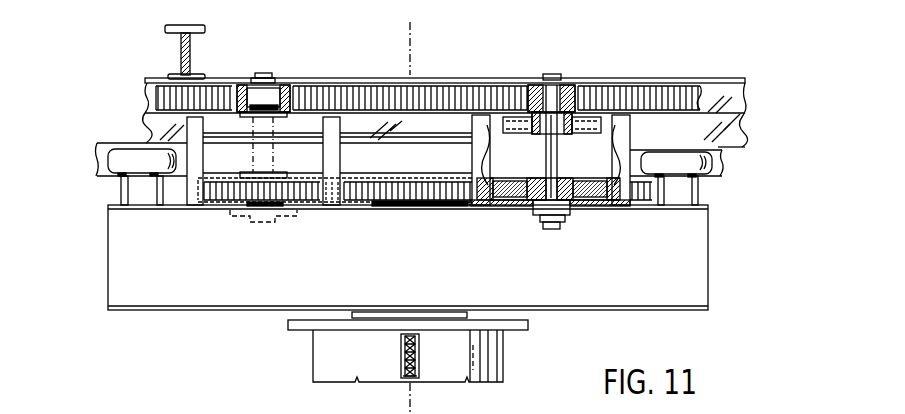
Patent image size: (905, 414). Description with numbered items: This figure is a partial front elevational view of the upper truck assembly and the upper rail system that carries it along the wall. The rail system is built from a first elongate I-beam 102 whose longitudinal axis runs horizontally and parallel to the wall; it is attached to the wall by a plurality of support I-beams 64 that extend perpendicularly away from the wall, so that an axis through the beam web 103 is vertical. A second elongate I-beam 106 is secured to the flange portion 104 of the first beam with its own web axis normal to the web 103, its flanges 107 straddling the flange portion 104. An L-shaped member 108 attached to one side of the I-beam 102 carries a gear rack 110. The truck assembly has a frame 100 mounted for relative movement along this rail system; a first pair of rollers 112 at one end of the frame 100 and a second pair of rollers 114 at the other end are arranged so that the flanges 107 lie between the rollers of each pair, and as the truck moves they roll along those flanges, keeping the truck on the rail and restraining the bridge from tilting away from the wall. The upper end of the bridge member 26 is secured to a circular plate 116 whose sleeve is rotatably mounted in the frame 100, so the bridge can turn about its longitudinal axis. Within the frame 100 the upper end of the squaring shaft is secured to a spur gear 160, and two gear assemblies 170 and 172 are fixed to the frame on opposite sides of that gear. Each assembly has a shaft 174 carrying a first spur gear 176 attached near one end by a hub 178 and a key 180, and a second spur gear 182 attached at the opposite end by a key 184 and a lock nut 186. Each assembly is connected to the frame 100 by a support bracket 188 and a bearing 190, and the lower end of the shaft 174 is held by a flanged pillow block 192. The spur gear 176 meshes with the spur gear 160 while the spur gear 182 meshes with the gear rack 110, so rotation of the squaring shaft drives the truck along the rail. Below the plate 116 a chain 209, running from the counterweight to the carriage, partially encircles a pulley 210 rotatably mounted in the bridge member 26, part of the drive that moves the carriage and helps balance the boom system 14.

The boom system 14 is at (414, 43).
The bridge member 26 is at (478, 365).
The support I-beam 64 is at (192, 53).
The upper frame 100 is at (218, 313).
The first elongate I-beam 102 is at (738, 74).
The beam web 103 is at (748, 115).
The flange portion 104 is at (747, 144).
The second elongate I-beam 106 is at (730, 172).
The flanges 107 is at (723, 165).
The L-shaped member 108 is at (693, 90).
The gear rack 110 is at (656, 88).
The first pair of rollers 112 is at (123, 161).
The second pair of rollers 114 is at (690, 168).
The circular plate 116 is at (529, 328).
The spur gear 160 is at (399, 201).
The gear assembly 170 is at (273, 69).
The gear assembly 172 is at (558, 72).
The shaft 174 is at (562, 222).
The first spur gear 176 is at (228, 192).
The hub 178 is at (511, 208).
The key 180 is at (545, 177).
The second spur gear 182 is at (576, 83).
The key 184 is at (535, 84).
The lock nut 186 is at (552, 74).
The support bracket 188 is at (596, 123).
The bearing 190 is at (561, 121).
The flanged pillow block 192 is at (535, 215).
The chain 209 is at (406, 379).
The pulley 210 is at (405, 335).